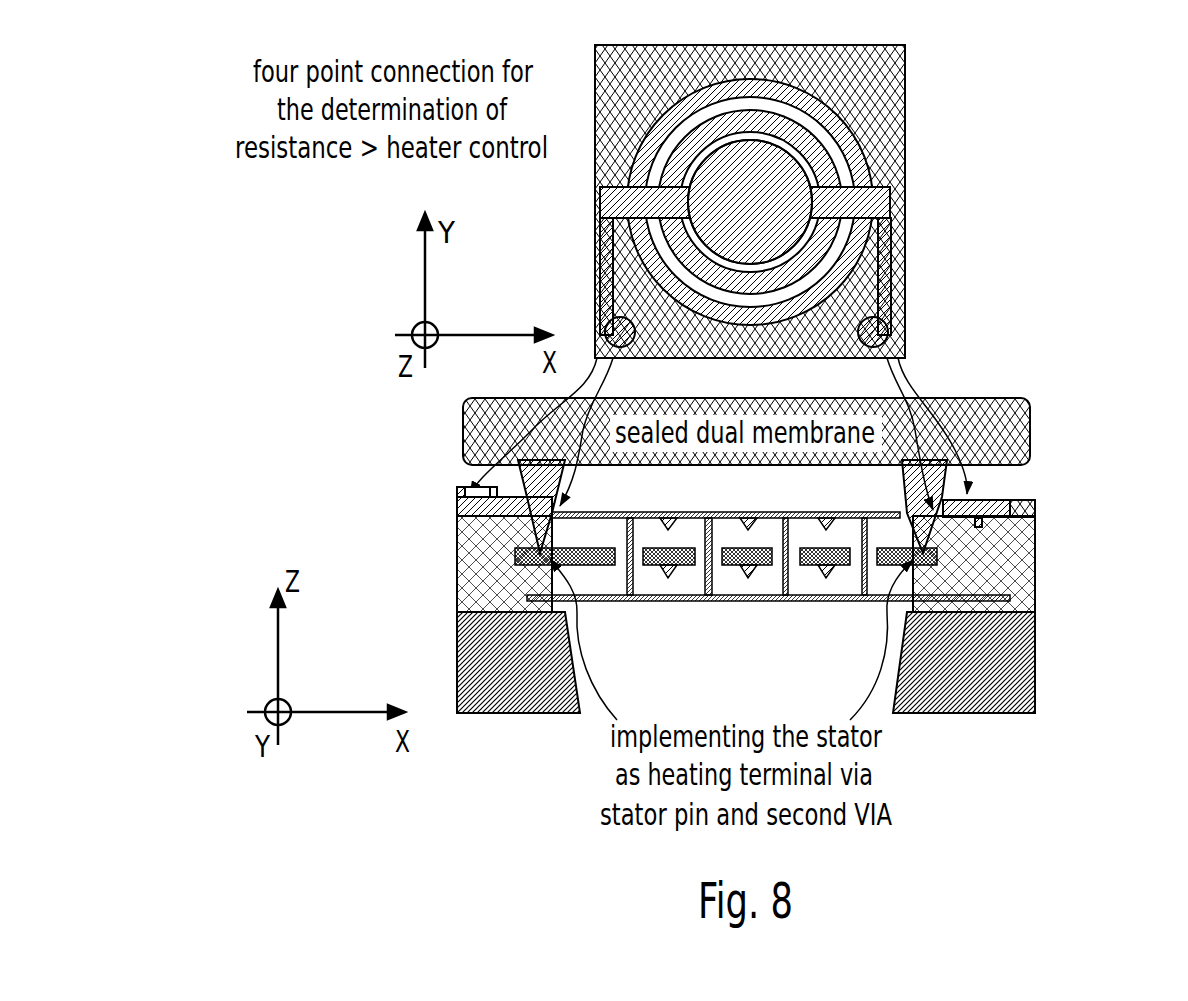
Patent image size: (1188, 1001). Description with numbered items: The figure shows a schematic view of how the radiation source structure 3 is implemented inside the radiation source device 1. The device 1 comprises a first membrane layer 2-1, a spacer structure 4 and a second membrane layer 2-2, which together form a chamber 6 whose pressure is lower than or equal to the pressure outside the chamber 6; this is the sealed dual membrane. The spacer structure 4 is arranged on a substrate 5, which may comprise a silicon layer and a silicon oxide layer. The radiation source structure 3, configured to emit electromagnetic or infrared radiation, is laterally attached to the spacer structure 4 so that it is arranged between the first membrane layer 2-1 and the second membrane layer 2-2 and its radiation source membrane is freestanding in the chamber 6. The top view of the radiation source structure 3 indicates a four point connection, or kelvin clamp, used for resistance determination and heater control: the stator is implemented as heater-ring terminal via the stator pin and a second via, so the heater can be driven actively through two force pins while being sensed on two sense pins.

The radiation source device 1 is at (797, 572).
The first membrane layer 2-1 is at (748, 513).
The second membrane layer 2-2 is at (822, 601).
The radiation source structure 3 is at (924, 62).
The spacer structure 4 is at (1028, 562).
The substrate 5 is at (1028, 667).
The chamber 6 is at (735, 590).